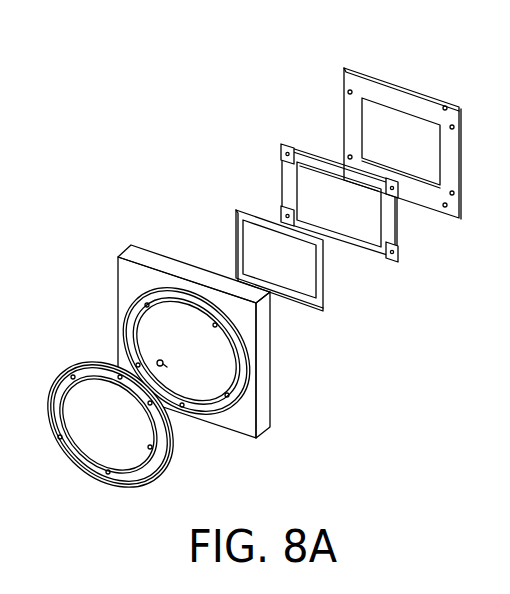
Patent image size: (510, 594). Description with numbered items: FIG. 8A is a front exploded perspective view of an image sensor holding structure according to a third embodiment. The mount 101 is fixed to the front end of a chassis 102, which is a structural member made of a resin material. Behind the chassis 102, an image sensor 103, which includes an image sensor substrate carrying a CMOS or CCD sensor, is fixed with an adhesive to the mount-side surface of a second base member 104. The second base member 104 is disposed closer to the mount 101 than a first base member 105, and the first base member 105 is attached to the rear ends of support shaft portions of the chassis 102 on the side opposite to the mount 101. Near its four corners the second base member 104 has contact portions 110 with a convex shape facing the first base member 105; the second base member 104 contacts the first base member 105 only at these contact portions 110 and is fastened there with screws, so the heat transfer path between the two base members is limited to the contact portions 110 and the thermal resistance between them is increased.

The mount 101 is at (78, 360).
The chassis 102 is at (127, 247).
The image sensor 103 is at (235, 224).
The second base member 104 is at (282, 178).
The first base member 105 is at (344, 68).
The contact portions 110 is at (287, 146).